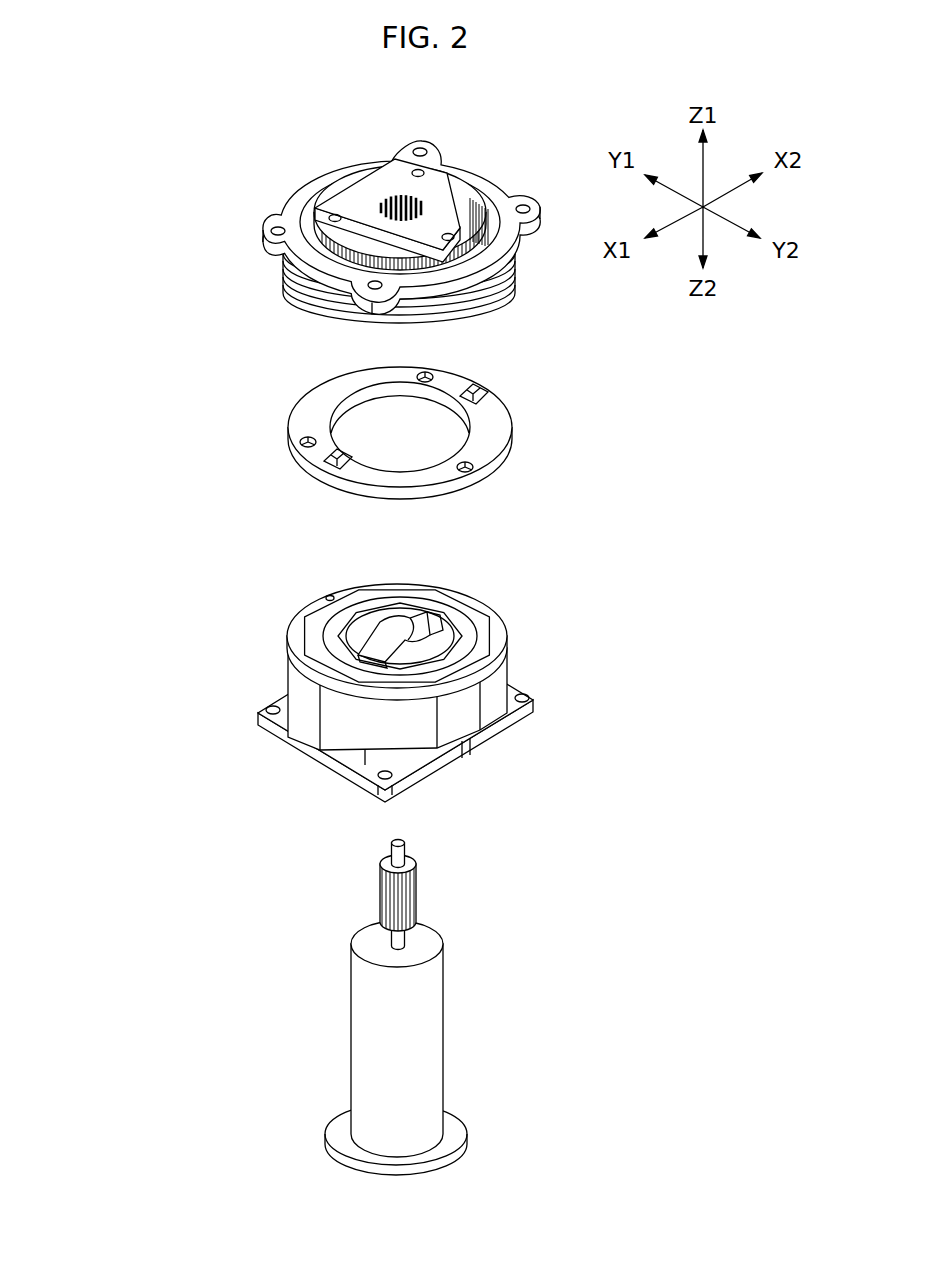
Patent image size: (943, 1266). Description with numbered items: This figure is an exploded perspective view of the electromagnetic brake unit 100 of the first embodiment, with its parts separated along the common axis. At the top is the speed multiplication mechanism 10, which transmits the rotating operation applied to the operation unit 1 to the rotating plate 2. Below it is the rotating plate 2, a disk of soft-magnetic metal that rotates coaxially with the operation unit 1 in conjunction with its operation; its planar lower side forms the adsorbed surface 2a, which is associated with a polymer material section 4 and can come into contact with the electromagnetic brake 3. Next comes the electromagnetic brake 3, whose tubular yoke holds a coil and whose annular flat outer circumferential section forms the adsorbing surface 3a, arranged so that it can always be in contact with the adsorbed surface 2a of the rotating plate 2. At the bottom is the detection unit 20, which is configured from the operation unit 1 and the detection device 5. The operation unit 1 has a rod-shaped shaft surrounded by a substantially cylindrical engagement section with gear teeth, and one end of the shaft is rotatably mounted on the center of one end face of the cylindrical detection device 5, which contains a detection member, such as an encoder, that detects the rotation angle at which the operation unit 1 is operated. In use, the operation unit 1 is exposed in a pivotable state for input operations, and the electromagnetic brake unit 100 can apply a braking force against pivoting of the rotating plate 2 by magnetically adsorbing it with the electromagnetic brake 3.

The electromagnetic brake unit 100 is at (278, 1050).
The speed multiplication mechanism 10 is at (265, 178).
The detection unit 20 is at (663, 802).
The operation unit 1 is at (425, 895).
The detection device 5 is at (417, 1025).
The rotating plate 2 is at (508, 435).
The adsorbed surface 2a is at (373, 500).
The polymer material section 4 is at (307, 477).
The electromagnetic brake 3 is at (310, 692).
The adsorbing surface 3a is at (398, 587).